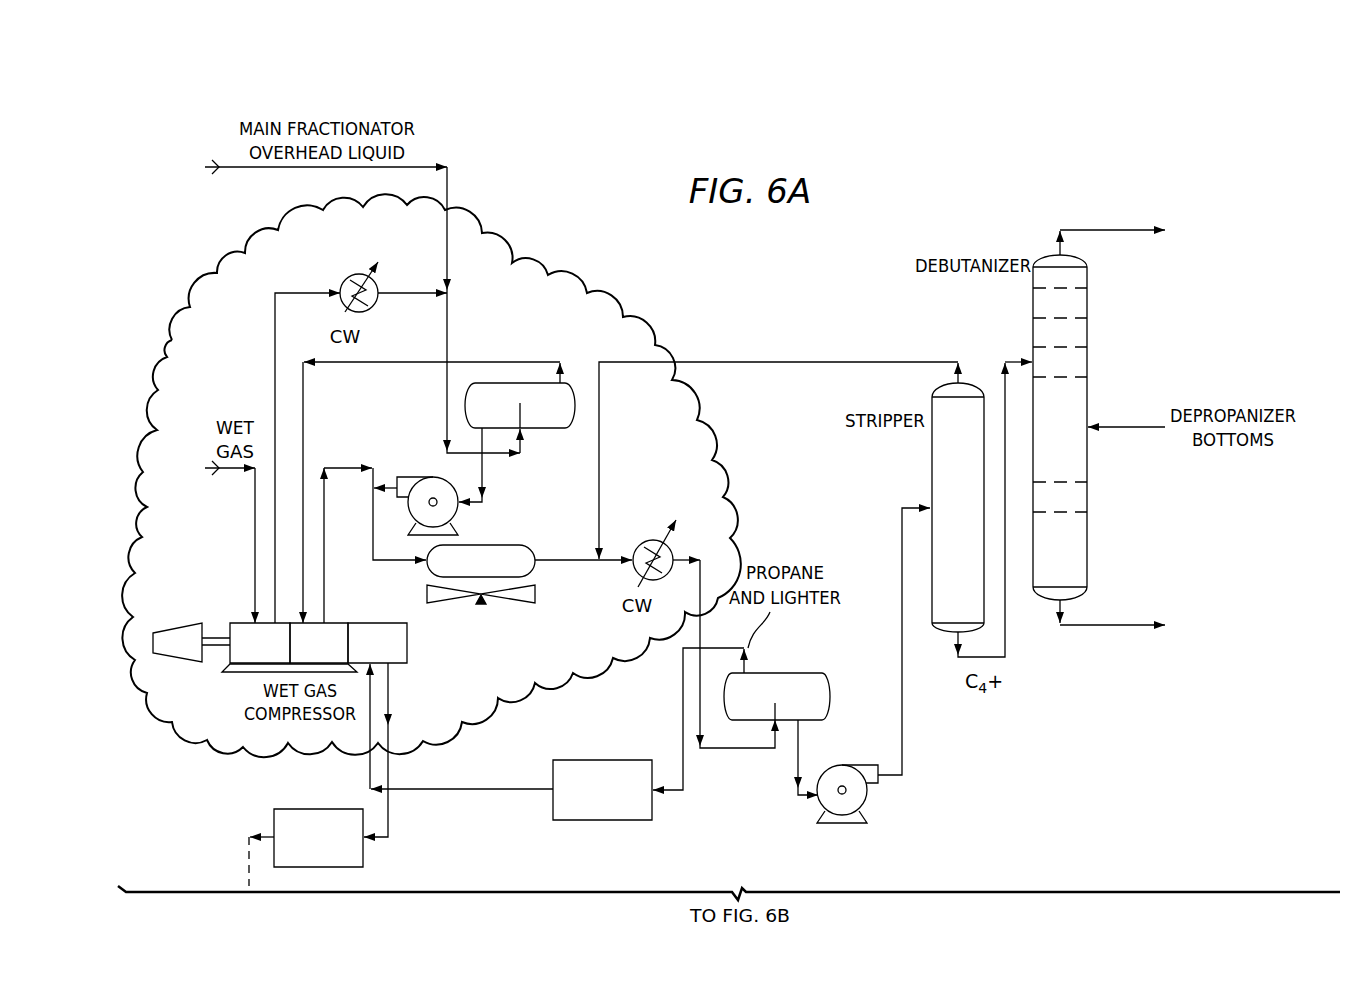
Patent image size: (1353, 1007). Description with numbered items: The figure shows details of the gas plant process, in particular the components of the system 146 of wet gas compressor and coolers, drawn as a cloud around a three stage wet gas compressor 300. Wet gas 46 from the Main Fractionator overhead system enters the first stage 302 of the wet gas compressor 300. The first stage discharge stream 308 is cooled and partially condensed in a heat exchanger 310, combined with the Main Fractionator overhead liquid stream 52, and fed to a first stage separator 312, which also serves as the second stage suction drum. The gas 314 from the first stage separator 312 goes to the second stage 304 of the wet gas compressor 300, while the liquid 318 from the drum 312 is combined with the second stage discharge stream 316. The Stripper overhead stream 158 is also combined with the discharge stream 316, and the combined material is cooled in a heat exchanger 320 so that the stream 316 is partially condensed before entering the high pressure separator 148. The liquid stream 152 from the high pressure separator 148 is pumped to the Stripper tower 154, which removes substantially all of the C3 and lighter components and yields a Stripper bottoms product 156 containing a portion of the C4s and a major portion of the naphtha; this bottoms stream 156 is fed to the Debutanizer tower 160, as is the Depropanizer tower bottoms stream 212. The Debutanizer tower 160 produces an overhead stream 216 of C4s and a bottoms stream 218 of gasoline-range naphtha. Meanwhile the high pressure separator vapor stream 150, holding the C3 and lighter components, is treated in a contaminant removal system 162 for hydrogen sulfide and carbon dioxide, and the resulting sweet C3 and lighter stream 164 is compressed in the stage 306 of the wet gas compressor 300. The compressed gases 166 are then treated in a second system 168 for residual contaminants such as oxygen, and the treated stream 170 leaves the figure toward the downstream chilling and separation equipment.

The wet gas 46 is at (254, 520).
The Main Fractionator overhead liquid stream 52 is at (450, 190).
The system of wet gas compressor and coolers 146 is at (574, 272).
The high pressure separator 148 is at (800, 672).
The high pressure separator vapor stream 150 is at (682, 677).
The liquid stream 152 is at (904, 718).
The Stripper tower 154 is at (930, 456).
The Stripper bottoms product 156 is at (1006, 648).
The Stripper overhead stream 158 is at (773, 360).
The Debutanizer tower 160 is at (1032, 300).
The contaminant removal system 162 is at (606, 760).
The sweet C3 and lighter stream 164 is at (518, 791).
The compressed gases 166 is at (390, 812).
The residual contaminant removal system 168 is at (364, 850).
The treated stream 170 is at (248, 842).
The Depropanizer tower bottoms stream 212 is at (1113, 426).
The Debutanizer overhead stream 216 is at (1113, 229).
The Debutanizer bottoms stream 218 is at (1113, 626).
The wet gas compressor 300 is at (312, 650).
The first stage 302 is at (243, 622).
The second stage 304 is at (338, 622).
The compressor stage 306 is at (407, 642).
The first stage discharge stream 308 is at (274, 358).
The heat exchanger 310 is at (348, 278).
The first stage separator 312 is at (546, 430).
The gas from first stage separator 314 is at (505, 358).
The second stage discharge stream 316 is at (360, 466).
The liquid from second stage suction drum 318 is at (483, 484).
The heat exchanger 320 is at (511, 601).